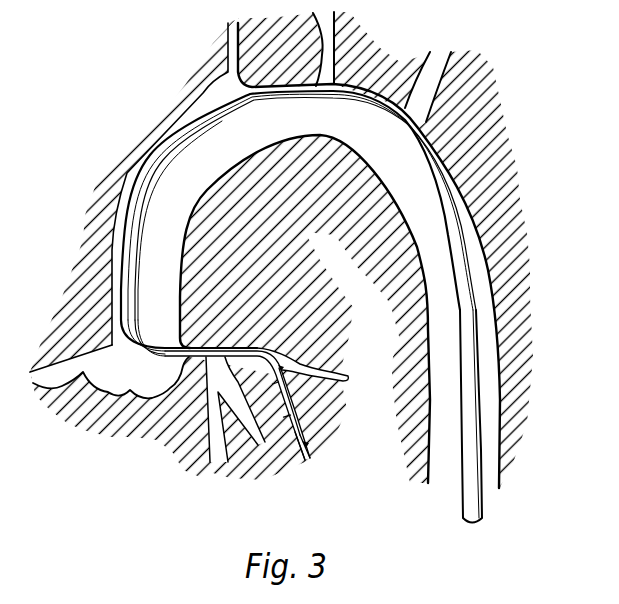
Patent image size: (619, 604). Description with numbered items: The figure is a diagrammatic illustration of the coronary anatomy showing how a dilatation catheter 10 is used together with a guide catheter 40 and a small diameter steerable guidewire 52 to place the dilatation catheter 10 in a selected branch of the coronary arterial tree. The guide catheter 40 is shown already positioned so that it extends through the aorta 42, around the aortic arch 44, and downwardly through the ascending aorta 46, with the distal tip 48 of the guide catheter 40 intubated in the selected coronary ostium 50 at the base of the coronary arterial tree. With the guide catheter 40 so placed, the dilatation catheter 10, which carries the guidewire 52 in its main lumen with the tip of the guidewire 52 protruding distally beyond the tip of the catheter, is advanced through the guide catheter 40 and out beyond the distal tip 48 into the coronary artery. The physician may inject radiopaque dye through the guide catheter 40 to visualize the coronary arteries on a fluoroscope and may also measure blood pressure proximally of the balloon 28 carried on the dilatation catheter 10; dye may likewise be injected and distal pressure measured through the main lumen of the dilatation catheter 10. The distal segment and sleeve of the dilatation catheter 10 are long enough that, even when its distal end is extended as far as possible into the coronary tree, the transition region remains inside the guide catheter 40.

The dilatation catheter 10 is at (257, 348).
The balloon 28 is at (287, 401).
The guide catheter 40 is at (252, 107).
The aorta 42 is at (487, 413).
The aortic arch 44 is at (343, 120).
The ascending aorta 46 is at (172, 250).
The distal tip 48 is at (176, 358).
The coronary ostium 50 is at (189, 351).
The steerable guidewire 52 is at (303, 442).